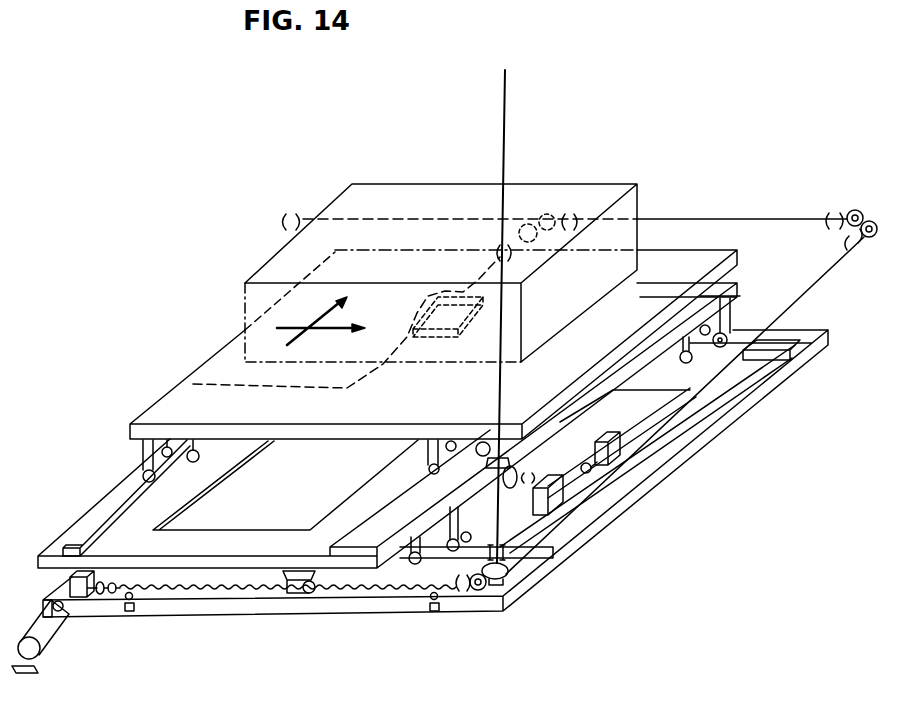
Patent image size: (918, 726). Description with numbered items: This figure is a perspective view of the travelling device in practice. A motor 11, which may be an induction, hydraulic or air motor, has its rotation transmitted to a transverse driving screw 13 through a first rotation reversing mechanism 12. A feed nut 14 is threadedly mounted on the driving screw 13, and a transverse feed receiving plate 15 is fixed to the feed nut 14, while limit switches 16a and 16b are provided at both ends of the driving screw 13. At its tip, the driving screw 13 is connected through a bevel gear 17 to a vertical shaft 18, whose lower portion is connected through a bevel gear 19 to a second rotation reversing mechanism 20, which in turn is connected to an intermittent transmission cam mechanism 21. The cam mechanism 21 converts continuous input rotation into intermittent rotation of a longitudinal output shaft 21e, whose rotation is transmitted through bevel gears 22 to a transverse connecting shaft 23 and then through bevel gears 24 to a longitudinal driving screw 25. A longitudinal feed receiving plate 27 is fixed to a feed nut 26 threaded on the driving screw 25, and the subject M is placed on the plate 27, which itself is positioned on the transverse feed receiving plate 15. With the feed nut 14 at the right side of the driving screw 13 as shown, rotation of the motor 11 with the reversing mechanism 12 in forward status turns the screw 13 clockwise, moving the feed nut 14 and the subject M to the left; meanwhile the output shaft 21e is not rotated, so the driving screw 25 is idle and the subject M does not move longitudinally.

The motor 11 is at (42, 638).
The first rotation reversing mechanism 12 is at (80, 598).
The transverse driving screw 13 is at (208, 590).
The feed nut 14 is at (297, 594).
The transverse feed receiving plate 15 is at (250, 537).
The limit switch 16a is at (128, 612).
The limit switch 16b is at (433, 612).
The bevel gear 17 is at (474, 594).
The vertical shaft 18 is at (502, 378).
The bevel gear 19 is at (500, 482).
The second rotation reversing mechanism 20 is at (556, 497).
The intermittent transmission cam mechanism 21 is at (610, 452).
The longitudinal output shaft 21e is at (690, 386).
The bevel gears 22 is at (856, 209).
The transverse connecting shaft 23 is at (782, 220).
The bevel gears 24 is at (530, 223).
The longitudinal driving screw 25 is at (193, 383).
The feed nut 26 is at (430, 296).
The longitudinal feed receiving plate 27 is at (673, 268).
The subject M is at (598, 195).